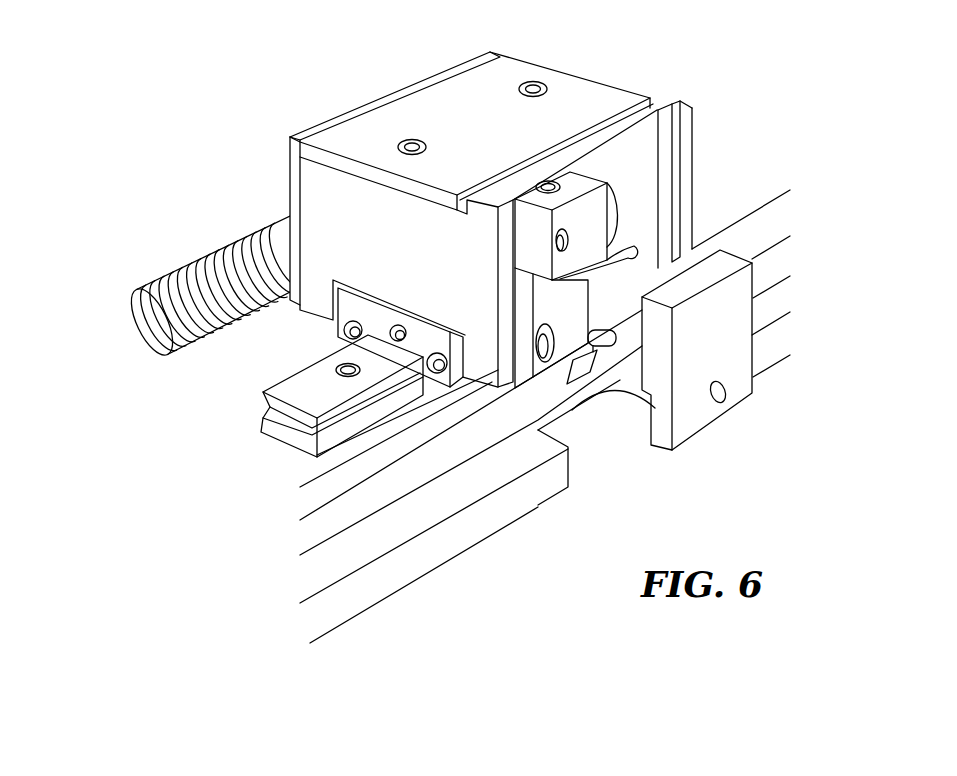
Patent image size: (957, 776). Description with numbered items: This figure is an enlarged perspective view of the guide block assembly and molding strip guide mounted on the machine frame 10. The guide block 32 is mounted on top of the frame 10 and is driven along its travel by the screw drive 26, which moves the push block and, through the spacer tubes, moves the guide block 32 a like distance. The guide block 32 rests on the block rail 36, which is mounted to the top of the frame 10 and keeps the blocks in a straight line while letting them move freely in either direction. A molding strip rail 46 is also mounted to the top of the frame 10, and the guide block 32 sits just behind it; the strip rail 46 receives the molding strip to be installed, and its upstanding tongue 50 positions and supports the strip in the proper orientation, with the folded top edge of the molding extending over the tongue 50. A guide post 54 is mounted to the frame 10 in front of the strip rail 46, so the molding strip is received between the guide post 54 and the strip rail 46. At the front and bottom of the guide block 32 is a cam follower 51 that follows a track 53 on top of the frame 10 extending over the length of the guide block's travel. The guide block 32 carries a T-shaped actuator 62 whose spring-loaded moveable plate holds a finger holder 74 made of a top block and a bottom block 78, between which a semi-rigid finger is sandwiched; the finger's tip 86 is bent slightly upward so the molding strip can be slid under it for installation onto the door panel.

The frame 10 is at (186, 422).
The screw drive 26 is at (190, 263).
The guide block 32 is at (360, 132).
The block rail 36 is at (275, 380).
The molding strip rail 46 is at (712, 238).
The upstanding tongue 50 is at (778, 200).
The cam follower 51 is at (611, 392).
The track 53 is at (398, 550).
The guide post 54 is at (703, 428).
The T-shaped actuator 62 is at (657, 153).
The finger holder 74 is at (610, 181).
The bottom block 78 is at (522, 382).
The tip 86 is at (630, 250).